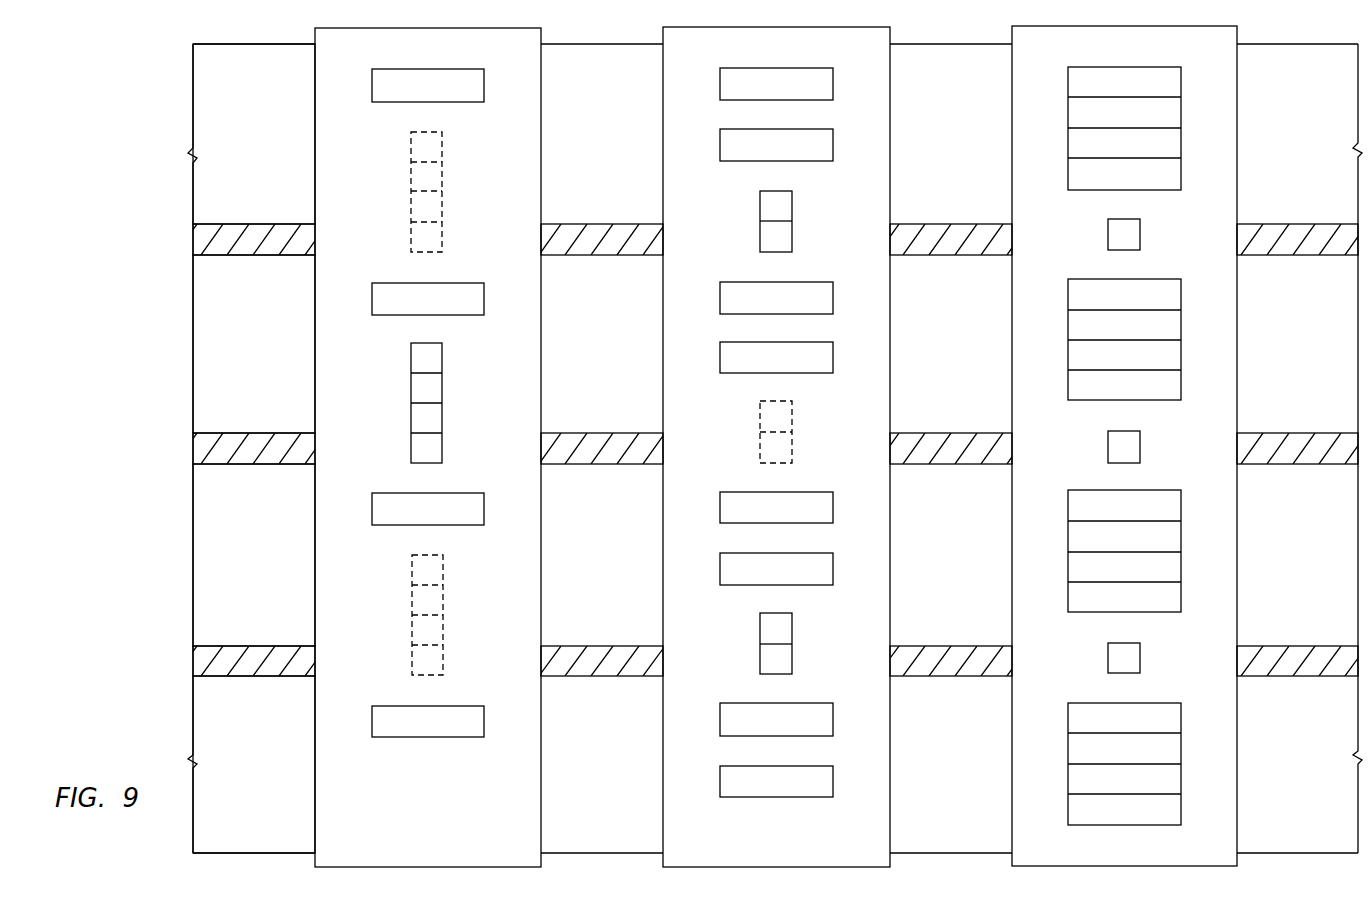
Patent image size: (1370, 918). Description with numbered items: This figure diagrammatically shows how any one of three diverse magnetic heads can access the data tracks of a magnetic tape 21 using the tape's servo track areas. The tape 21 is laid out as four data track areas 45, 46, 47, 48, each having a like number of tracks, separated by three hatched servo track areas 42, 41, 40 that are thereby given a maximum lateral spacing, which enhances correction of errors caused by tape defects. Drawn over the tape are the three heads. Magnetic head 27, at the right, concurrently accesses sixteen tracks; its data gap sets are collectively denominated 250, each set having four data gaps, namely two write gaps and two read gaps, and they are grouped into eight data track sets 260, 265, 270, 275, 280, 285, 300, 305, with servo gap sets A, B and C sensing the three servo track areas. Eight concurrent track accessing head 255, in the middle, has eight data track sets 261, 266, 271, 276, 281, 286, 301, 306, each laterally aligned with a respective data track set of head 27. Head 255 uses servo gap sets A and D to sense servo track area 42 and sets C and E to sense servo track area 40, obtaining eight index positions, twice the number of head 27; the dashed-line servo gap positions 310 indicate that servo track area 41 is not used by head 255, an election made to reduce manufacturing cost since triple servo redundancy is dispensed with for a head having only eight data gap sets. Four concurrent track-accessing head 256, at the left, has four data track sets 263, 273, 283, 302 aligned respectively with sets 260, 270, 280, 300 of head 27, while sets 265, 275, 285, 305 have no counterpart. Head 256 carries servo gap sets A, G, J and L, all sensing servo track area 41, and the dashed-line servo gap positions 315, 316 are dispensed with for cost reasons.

The magnetic tape 21 is at (192, 131).
The servo track area 40 is at (196, 663).
The servo track area 41 is at (196, 453).
The servo track area 42 is at (196, 241).
The data track area 45 is at (242, 144).
The data track area 46 is at (242, 362).
The data track area 47 is at (242, 566).
The data track area 48 is at (242, 776).
The magnetic head 27 is at (1113, 859).
The eight concurrent track accessing head 255 is at (759, 844).
The four concurrent track-accessing head 256 is at (411, 846).
The data gap sets 250 is at (1125, 437).
The data gap set 260 is at (1068, 89).
The data track set 265 is at (1068, 151).
The data track set 270 is at (1068, 301).
The data track set 275 is at (1068, 364).
The data track set 280 is at (1068, 514).
The data track set 285 is at (1068, 576).
The data track set 300 is at (1068, 726).
The data track set 305 is at (1068, 787).
The data track set 261 is at (719, 91).
The data track set 266 is at (719, 152).
The data track set 271 is at (719, 305).
The data track set 276 is at (719, 365).
The data track set 281 is at (719, 515).
The data track set 286 is at (719, 576).
The data track set 301 is at (719, 726).
The data track set 306 is at (719, 789).
The data track set 263 is at (371, 92).
The data track set 273 is at (371, 306).
The data track set 283 is at (371, 516).
The data track set 302 is at (371, 729).
The servo gap positions 310 is at (793, 430).
The servo gap positions 315 is at (443, 197).
The servo gap positions 316 is at (444, 620).